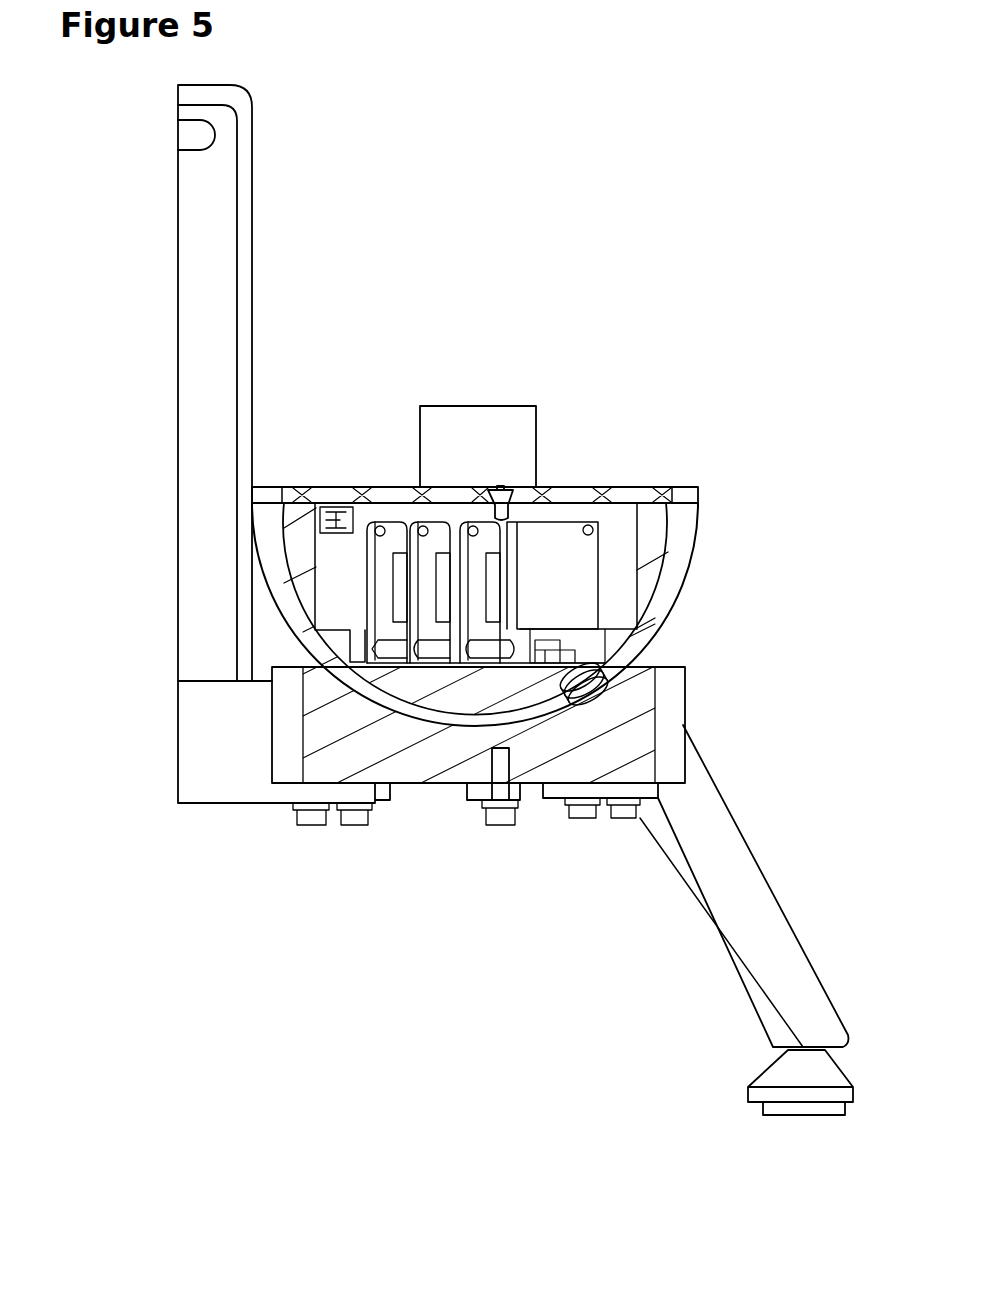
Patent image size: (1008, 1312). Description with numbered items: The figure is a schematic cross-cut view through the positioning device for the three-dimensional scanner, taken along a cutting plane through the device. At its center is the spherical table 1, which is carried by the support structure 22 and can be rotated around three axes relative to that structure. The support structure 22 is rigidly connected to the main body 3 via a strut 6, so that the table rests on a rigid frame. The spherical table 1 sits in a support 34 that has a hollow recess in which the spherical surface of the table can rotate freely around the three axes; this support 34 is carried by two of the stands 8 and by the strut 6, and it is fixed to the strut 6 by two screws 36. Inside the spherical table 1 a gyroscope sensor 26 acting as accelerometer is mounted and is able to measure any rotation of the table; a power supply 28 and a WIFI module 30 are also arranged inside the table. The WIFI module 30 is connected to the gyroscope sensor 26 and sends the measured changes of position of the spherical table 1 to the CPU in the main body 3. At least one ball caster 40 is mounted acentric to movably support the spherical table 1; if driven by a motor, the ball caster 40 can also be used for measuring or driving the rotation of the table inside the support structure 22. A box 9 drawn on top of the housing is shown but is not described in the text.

The spherical table 1 is at (350, 493).
The main body 3 is at (195, 572).
The strut 6 is at (217, 775).
The stand 8 is at (748, 990).
The connection box 9 is at (527, 405).
The support structure 22 is at (443, 750).
The gyroscope sensor 26 is at (495, 575).
The power supply 28 is at (440, 570).
The WIFI module 30 is at (390, 570).
The support 34 is at (178, 375).
The screws 36 is at (315, 815).
The ball caster 40 is at (592, 695).